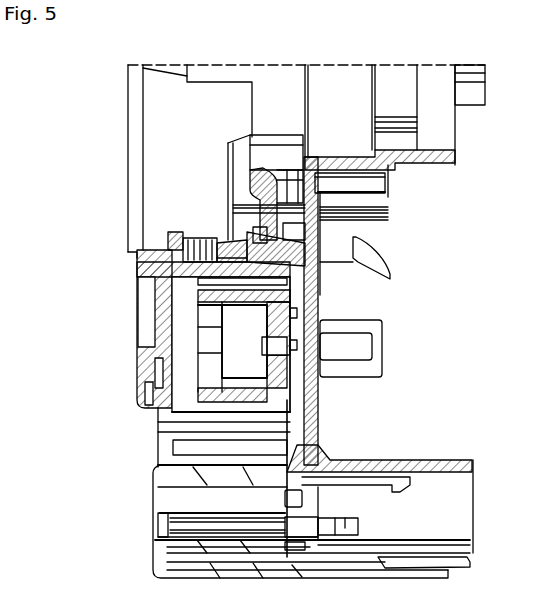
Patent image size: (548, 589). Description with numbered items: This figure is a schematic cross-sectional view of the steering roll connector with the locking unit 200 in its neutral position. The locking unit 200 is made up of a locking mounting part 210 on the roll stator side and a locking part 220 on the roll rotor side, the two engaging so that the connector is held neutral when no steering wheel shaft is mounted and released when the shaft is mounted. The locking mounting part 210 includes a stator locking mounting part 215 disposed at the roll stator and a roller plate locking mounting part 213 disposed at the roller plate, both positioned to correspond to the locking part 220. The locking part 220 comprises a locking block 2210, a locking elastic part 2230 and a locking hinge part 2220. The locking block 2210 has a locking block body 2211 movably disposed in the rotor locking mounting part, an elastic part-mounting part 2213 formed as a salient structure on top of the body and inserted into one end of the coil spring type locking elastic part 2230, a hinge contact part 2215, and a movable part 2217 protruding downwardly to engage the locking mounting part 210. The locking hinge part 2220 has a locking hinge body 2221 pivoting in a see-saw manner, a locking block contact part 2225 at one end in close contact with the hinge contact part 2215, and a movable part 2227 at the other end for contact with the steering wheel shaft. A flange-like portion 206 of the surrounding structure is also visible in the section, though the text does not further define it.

The locking unit 200 is at (500, 378).
The locking mounting part 210 is at (470, 360).
The roller plate locking mounting part 213 is at (318, 270).
The stator locking mounting part 215 is at (318, 260).
The locking part 220 is at (65, 82).
The locking hinge part 2220 is at (485, 227).
The locking block 2210 is at (93, 95).
The locking elastic part 2230 is at (127, 240).
The movable part 2217 is at (247, 203).
The hinge contact part 2215 is at (253, 237).
The locking block body 2211 is at (277, 242).
The elastic part-mounting part 2213 is at (168, 236).
The flange 206 is at (452, 152).
The movable part 2227 is at (322, 177).
The locking hinge body 2221 is at (324, 222).
The locking block contact part 2225 is at (325, 227).